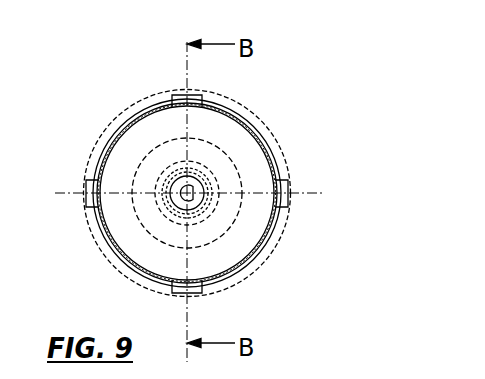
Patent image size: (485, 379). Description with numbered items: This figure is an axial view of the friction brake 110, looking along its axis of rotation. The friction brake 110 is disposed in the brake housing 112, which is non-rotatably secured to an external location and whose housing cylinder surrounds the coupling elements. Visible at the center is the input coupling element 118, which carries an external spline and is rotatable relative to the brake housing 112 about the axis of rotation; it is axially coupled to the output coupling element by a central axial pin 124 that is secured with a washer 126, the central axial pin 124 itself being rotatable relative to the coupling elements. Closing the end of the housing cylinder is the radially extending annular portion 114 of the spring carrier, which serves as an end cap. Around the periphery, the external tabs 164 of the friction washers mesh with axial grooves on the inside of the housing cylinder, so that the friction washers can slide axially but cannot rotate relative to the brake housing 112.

The friction brake 110 is at (289, 97).
The brake housing 112 is at (268, 140).
The radially extending annular portion 114 is at (135, 240).
The input coupling element 118 is at (158, 187).
The central axial pin 124 is at (194, 189).
The washer 126 is at (196, 208).
The external tabs 164 is at (200, 282).